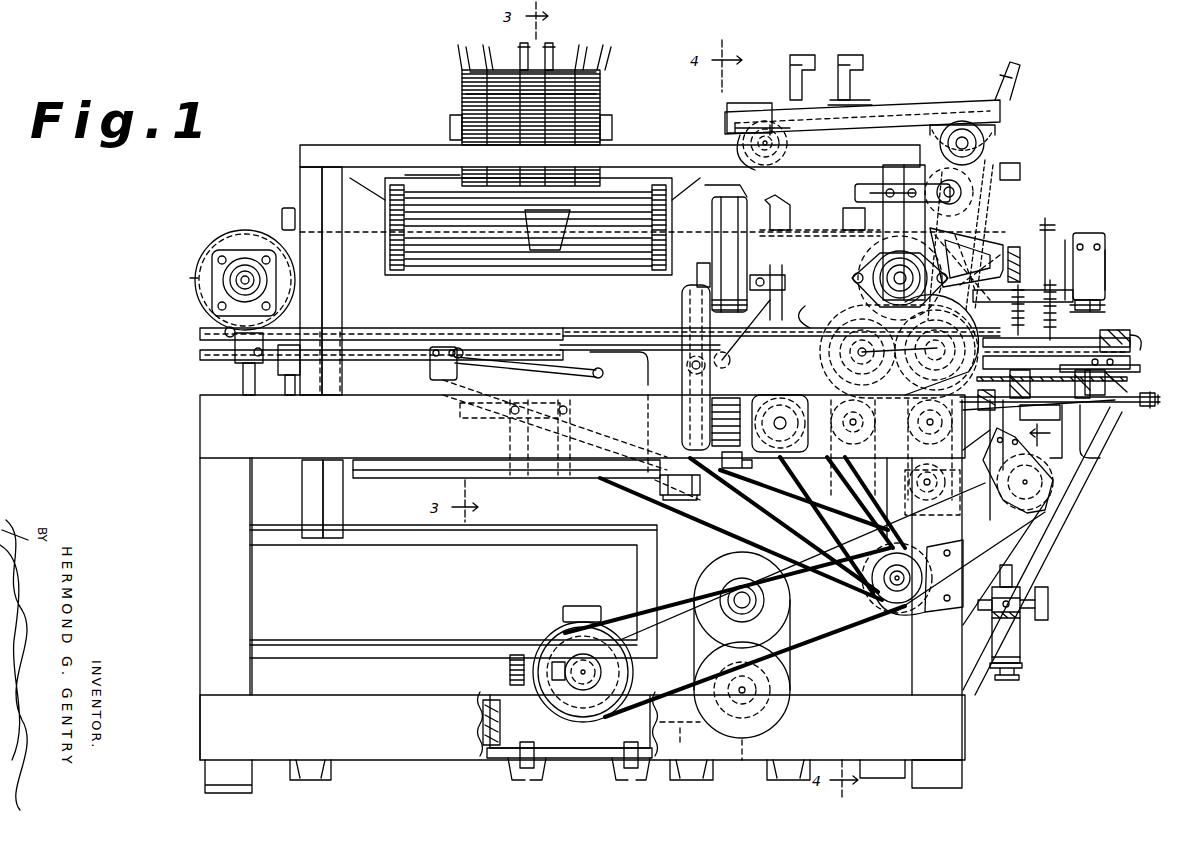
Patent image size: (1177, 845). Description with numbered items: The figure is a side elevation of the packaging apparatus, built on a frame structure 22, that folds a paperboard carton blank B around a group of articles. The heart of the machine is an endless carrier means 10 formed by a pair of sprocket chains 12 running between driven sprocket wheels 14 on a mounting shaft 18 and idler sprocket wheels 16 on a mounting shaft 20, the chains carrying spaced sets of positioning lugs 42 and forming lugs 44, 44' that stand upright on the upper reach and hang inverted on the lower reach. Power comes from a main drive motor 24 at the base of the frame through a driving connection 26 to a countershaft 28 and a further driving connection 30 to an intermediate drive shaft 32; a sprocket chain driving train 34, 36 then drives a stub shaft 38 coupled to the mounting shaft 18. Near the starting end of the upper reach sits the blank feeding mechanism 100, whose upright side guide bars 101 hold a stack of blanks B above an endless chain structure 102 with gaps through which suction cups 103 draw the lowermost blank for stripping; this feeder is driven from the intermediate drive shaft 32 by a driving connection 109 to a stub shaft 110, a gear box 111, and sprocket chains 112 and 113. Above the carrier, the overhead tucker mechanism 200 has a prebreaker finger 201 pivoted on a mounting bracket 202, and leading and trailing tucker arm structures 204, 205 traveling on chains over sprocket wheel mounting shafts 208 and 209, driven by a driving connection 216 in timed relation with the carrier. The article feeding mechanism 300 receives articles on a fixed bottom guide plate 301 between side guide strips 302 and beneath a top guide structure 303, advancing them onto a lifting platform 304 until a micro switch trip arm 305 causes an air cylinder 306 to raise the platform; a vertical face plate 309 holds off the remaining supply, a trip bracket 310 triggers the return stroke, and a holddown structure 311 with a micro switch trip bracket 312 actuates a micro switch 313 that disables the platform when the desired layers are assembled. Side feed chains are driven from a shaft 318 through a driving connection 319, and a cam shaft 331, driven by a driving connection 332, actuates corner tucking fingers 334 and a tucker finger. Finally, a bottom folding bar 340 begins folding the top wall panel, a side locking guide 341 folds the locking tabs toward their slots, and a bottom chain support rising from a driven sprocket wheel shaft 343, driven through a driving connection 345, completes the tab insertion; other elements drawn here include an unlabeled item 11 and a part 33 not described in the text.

The endless carrier means 10 is at (191, 284).
The bracket 11 is at (1030, 268).
The sprocket chains 12 is at (204, 246).
The driven sprocket wheels 14 is at (860, 252).
The idler sprocket wheels 16 is at (246, 235).
The mounting shaft 18 is at (895, 278).
The mounting shaft 20 is at (238, 283).
The frame structure 22 is at (192, 498).
The main drive motor 24 is at (793, 665).
The driving connection 26 is at (635, 728).
The countershaft 28 is at (510, 672).
The driving connection 30 is at (685, 606).
The intermediate drive shaft 32 is at (895, 605).
The link 33 is at (799, 307).
The sprocket chain driving train 34 is at (995, 552).
The sprocket chain driving train 36 is at (1010, 500).
The stub shaft 38 is at (858, 356).
The positioning lugs 42 is at (445, 205).
The forming lugs 44 is at (714, 219).
The forming lugs 44' is at (561, 237).
The paperboard carton structure blank B is at (482, 68).
The blank feeding mechanism 100 is at (454, 72).
The upright side guide bars 101 is at (470, 96).
The endless chain structure 102 is at (414, 175).
The suction cups 103 is at (555, 270).
The driving connection 109 is at (785, 470).
The stub shaft 110 is at (778, 395).
The gear box 111 is at (748, 366).
The sprocket chain 112 is at (684, 395).
The sprocket chain 113 is at (775, 265).
The overhead tucker mechanism 200 is at (913, 99).
The prebreaker finger 201 is at (776, 208).
The mounting bracket 202 is at (720, 200).
The leading tucker arm structure 204 is at (818, 60).
The trailing tucker arm structure 205 is at (855, 80).
The sprocket wheel mounting shaft 208 is at (960, 130).
The sprocket wheel mounting shaft 209 is at (752, 130).
The driving connection 216 is at (965, 190).
The article feeding mechanism 300 is at (1097, 230).
The fixed bottom guide plate 301 is at (1105, 395).
The side guide strips 302 is at (1130, 384).
The top guide structure 303 is at (1140, 338).
The lifting platform 304 is at (1052, 378).
The micro switch trip arm 305 is at (1035, 344).
The air cylinder 306 is at (1060, 470).
The vertical face plate 309 is at (1080, 430).
The trip bracket 310 is at (1088, 456).
The holddown structure 311 is at (1016, 322).
The micro switch trip bracket 312 is at (1062, 316).
The micro switch 313 is at (1100, 308).
The shaft 318 is at (933, 482).
The driving connection 319 is at (858, 424).
The cam shaft 331 is at (725, 470).
The driving connection 332 is at (762, 498).
The corner tucking fingers 334 is at (745, 350).
The bottom folding bar 340 is at (512, 365).
The side locking guide 341 is at (366, 362).
The driven sprocket wheel shaft 343 is at (438, 385).
The driving connection 345 is at (600, 482).